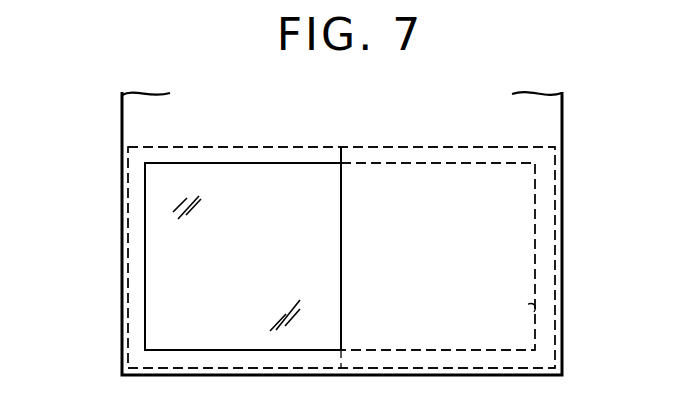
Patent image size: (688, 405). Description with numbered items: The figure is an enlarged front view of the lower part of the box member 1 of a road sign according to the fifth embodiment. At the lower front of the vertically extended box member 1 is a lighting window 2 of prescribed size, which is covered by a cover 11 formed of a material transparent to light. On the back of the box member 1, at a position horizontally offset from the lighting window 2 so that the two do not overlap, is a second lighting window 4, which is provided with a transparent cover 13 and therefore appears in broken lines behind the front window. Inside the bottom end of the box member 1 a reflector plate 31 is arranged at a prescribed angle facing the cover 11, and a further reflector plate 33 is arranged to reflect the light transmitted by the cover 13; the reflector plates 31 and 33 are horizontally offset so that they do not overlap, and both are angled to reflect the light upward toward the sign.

The box member 1 is at (138, 123).
The lighting window 2 is at (145, 194).
The cover 11 is at (167, 244).
The reflector plate 31 is at (125, 315).
The transparent cover 13 is at (562, 191).
The reflector plate 33 is at (555, 246).
The lighting window 4 is at (530, 323).